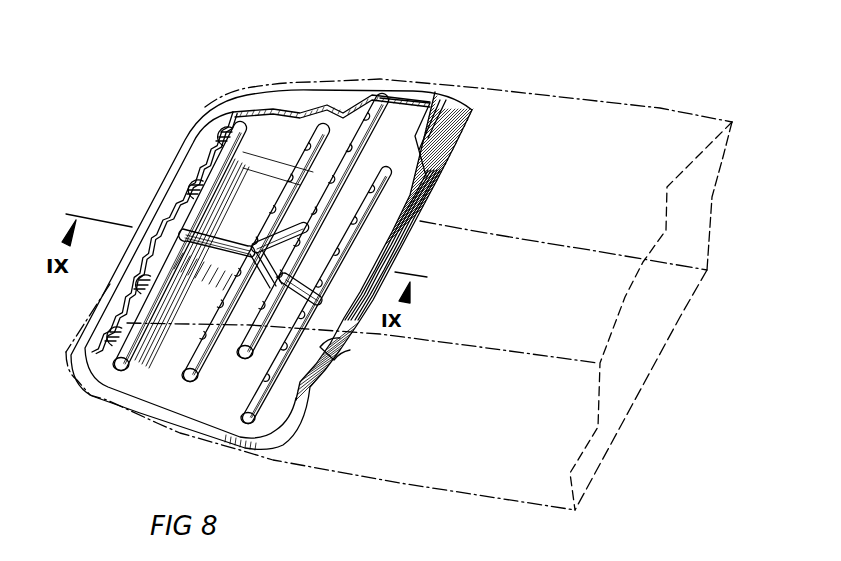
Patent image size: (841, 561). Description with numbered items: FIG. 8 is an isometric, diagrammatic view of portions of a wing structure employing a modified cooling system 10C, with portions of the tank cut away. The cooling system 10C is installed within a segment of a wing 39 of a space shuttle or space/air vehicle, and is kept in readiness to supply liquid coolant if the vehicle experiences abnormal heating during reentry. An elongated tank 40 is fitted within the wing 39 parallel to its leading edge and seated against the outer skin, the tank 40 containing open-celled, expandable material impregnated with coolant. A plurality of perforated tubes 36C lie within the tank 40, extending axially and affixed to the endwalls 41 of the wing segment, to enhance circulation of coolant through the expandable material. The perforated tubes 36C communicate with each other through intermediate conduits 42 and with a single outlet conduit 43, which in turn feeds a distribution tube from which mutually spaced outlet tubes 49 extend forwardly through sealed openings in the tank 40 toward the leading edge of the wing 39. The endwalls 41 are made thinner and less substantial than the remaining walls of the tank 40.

The cooling system 10C is at (420, 53).
The wing 39 is at (540, 83).
The tank 40 is at (440, 178).
The endwalls 41 is at (282, 122).
The outlet tubes 49 is at (175, 200).
The intermediate conduits 42 is at (263, 238).
The outlet conduit 43 is at (232, 260).
The perforated tubes 36C is at (368, 243).